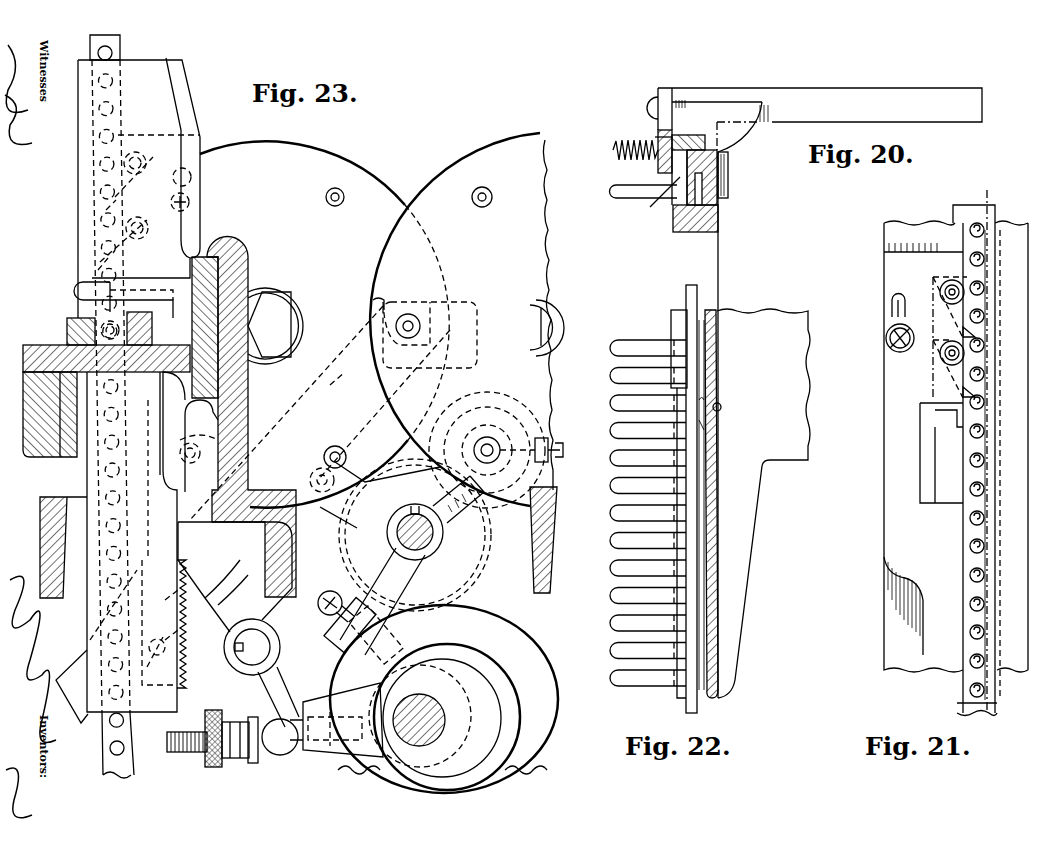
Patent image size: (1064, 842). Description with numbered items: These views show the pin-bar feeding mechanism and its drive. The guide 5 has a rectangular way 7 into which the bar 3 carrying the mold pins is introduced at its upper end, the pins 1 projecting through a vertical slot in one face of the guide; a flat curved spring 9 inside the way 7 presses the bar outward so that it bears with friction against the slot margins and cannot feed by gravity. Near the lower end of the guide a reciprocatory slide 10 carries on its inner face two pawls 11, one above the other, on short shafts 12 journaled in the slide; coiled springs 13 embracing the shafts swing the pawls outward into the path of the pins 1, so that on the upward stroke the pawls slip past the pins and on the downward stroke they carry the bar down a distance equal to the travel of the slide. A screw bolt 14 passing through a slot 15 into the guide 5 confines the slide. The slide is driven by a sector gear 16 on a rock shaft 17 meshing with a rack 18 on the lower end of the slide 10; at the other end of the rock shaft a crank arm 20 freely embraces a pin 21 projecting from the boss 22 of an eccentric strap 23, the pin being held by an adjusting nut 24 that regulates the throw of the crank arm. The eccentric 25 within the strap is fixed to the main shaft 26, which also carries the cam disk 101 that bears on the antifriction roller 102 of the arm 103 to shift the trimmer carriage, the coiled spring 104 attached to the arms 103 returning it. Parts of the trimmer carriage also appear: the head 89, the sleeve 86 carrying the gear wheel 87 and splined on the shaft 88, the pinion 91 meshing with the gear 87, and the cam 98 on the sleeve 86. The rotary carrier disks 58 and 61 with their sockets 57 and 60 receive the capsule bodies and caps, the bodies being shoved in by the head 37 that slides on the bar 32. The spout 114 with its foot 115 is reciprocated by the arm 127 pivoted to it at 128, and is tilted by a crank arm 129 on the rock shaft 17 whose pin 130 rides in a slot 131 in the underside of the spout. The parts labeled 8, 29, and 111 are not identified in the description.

In FIG. 20, the pins 1 is at (625, 198).
In FIG. 22, the pins 1 is at (628, 344).
In FIG. 21, the pins 1 is at (980, 290).
In FIG. 23, the bar 3 is at (122, 47).
In FIG. 20, the bar 3 is at (702, 150).
In FIG. 22, the bar 3 is at (700, 288).
In FIG. 21, the bar 3 is at (998, 688).
In FIG. 20, the guide 5 is at (718, 220).
In FIG. 22, the guide 5 is at (708, 536).
In FIG. 21, the guide 5 is at (1018, 218).
In FIG. 20, the rectangular way 7 is at (728, 195).
In FIG. 22, the rectangular way 7 is at (700, 350).
In FIG. 21, the strip guide 8 is at (985, 354).
In FIG. 22, the flat curved spring 9 is at (708, 467).
In FIG. 23, the reciprocatory slide 10 is at (204, 138).
In FIG. 20, the reciprocatory slide 10 is at (660, 168).
In FIG. 21, the reciprocatory slide 10 is at (941, 410).
In FIG. 23, the pawls 11 is at (100, 198).
In FIG. 21, the pawls 11 is at (976, 331).
In FIG. 23, the short shafts 12 is at (148, 162).
In FIG. 20, the short shafts 12 is at (612, 150).
In FIG. 21, the short shafts 12 is at (945, 288).
In FIG. 20, the coiled springs 13 is at (655, 137).
In FIG. 23, the screw bolt 14 is at (190, 202).
In FIG. 20, the screw bolt 14 is at (650, 106).
In FIG. 21, the screw bolt 14 is at (886, 338).
In FIG. 23, the slot 15 is at (192, 177).
In FIG. 21, the slot 15 is at (890, 299).
In FIG. 23, the sector gear 16 is at (235, 585).
In FIG. 23, the rock shaft 17 is at (270, 647).
In FIG. 23, the rack 18 is at (186, 593).
In FIG. 23, the crank arm 20 is at (277, 711).
In FIG. 23, the pin 21 is at (191, 753).
In FIG. 23, the boss 22 is at (325, 752).
In FIG. 21, the boss 22 is at (987, 205).
In FIG. 23, the eccentric strap 23 is at (417, 777).
In FIG. 23, the adjusting nut 24 is at (238, 758).
In FIG. 23, the eccentric 25 is at (434, 716).
In FIG. 23, the main shaft 26 is at (424, 712).
In FIG. 23, the pin 29 is at (70, 318).
In FIG. 23, the rectangular bar 32 is at (58, 380).
In FIG. 23, the head 37 is at (163, 375).
In FIG. 23, the sockets 57 is at (344, 201).
In FIG. 23, the rotary carrier disk 58 is at (324, 325).
In FIG. 23, the sockets 60 is at (492, 203).
In FIG. 23, the rotary carrier disk 61 is at (467, 319).
In FIG. 23, the sleeve 86 is at (414, 504).
In FIG. 23, the gear wheel 87 is at (470, 578).
In FIG. 23, the horizontal shaft 88 is at (420, 550).
In FIG. 23, the head 89 is at (551, 433).
In FIG. 23, the pinion 91 is at (487, 426).
In FIG. 23, the cam 98 is at (455, 522).
In FIG. 23, the cam disk 101 is at (532, 656).
In FIG. 23, the antifriction roller 102 is at (352, 645).
In FIG. 23, the arm 103 is at (380, 558).
In FIG. 23, the coiled spring 104 is at (330, 592).
In FIG. 20, the pin 111 is at (664, 201).
In FIG. 23, the spout 114 is at (320, 378).
In FIG. 23, the foot 115 is at (478, 325).
In FIG. 23, the arm 127 is at (415, 535).
In FIG. 23, the pivot 128 is at (346, 461).
In FIG. 23, the crank arm 129 is at (179, 613).
In FIG. 23, the pin 130 is at (149, 649).
In FIG. 23, the slot 131 is at (140, 665).